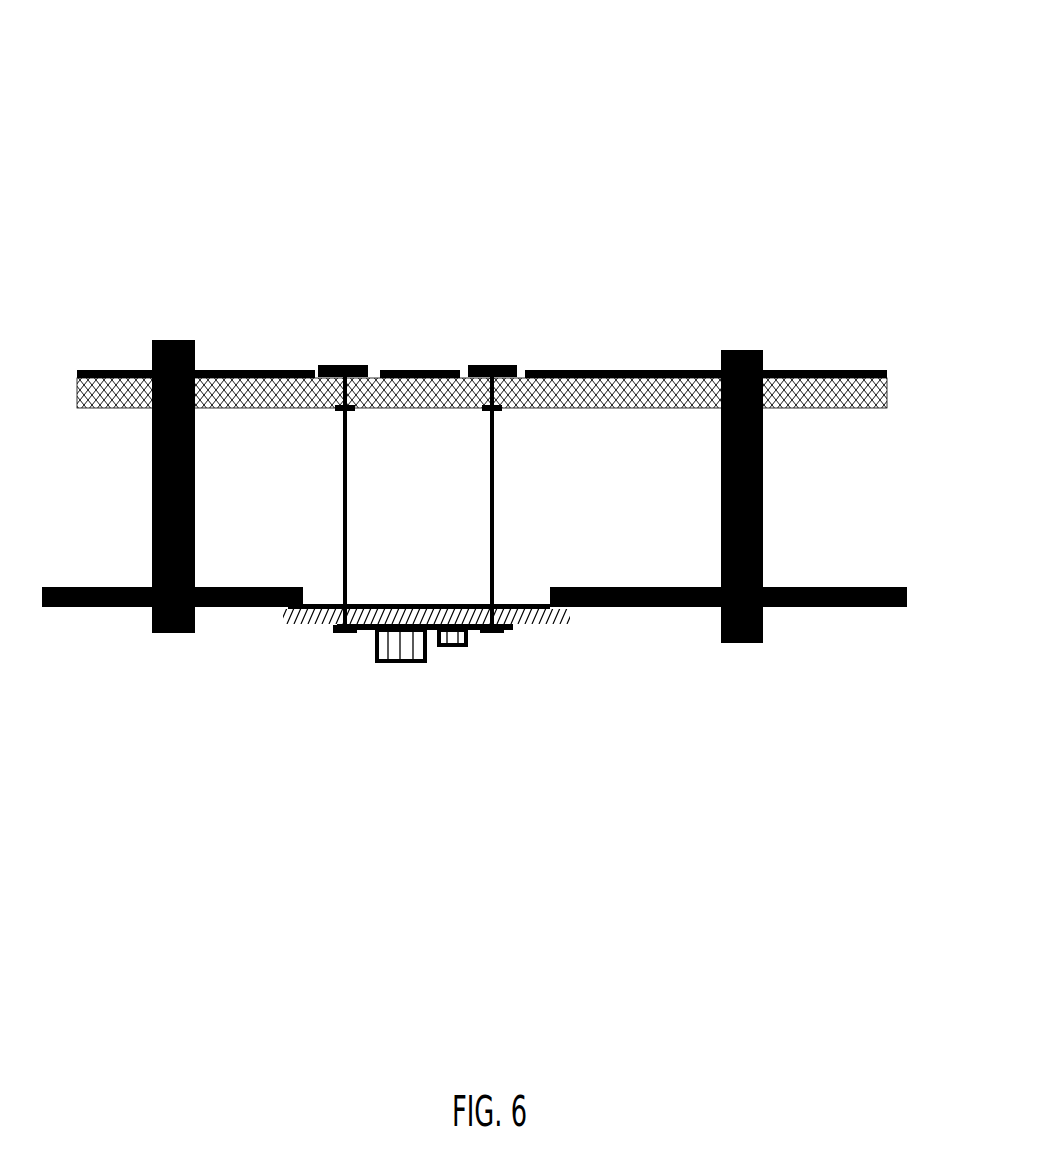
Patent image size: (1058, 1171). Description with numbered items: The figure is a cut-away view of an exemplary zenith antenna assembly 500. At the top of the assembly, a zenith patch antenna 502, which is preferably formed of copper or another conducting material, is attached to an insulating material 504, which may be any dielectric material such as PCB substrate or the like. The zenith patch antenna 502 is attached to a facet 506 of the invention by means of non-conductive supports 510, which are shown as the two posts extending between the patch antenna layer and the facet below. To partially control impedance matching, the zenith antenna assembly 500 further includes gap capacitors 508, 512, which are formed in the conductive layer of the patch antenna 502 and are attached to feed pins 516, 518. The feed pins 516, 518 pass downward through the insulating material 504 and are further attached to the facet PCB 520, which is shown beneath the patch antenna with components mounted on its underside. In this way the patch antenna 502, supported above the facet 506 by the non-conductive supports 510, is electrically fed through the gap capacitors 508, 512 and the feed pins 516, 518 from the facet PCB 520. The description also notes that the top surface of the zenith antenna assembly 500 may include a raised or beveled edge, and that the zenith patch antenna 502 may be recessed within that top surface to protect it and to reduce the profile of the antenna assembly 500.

The zenith antenna assembly 500 is at (561, 68).
The zenith patch antenna 502 is at (270, 370).
The insulating material 504 is at (888, 393).
The facet 506 is at (827, 607).
The gap capacitor 508 is at (345, 365).
The non-conductive supports 510 is at (172, 633).
The gap capacitor 512 is at (492, 368).
The feed pin 516 is at (344, 492).
The feed pin 518 is at (492, 457).
The facet PCB 520 is at (515, 628).